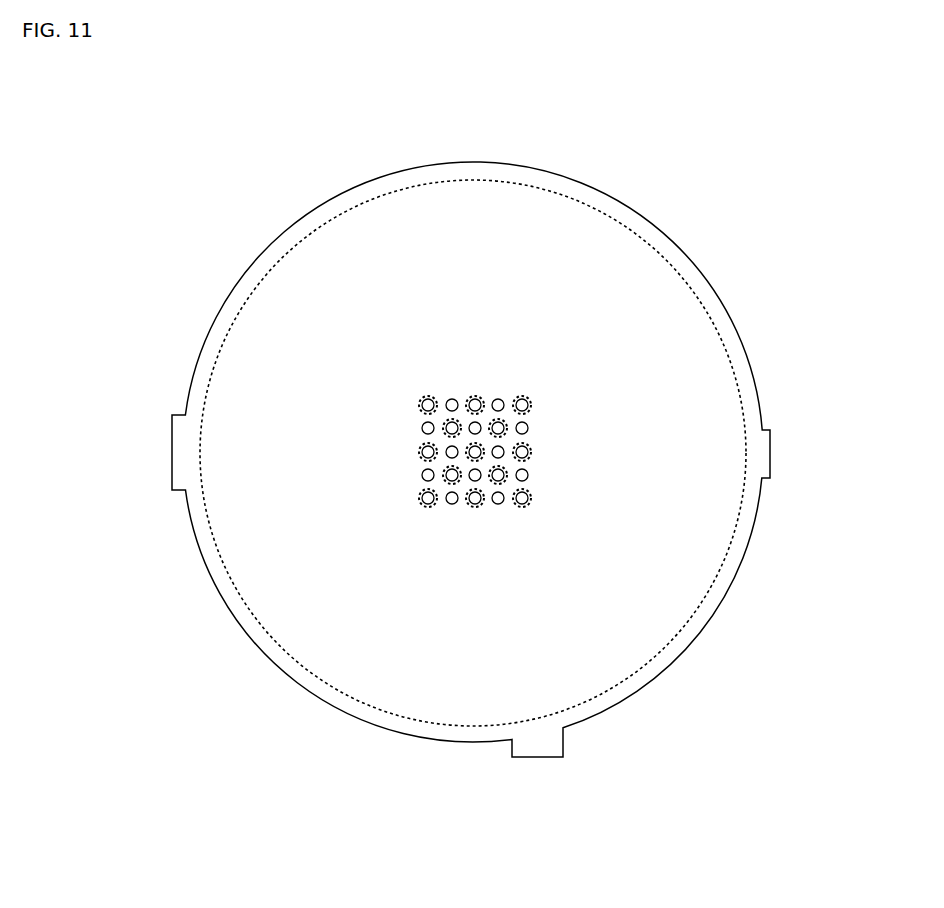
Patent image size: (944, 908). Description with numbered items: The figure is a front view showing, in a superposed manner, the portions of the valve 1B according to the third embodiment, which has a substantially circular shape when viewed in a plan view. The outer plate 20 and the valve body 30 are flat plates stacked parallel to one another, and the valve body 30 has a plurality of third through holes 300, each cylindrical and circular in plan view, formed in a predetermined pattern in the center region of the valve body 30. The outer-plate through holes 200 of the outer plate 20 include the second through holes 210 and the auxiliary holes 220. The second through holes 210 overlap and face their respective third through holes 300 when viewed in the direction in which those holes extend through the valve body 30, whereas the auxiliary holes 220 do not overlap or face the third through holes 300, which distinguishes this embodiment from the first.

The valve 1B is at (738, 120).
The outer plate 20 is at (680, 242).
The valve body 30 is at (607, 215).
The outer-plate through holes 200 is at (823, 338).
The second through holes 210 is at (530, 450).
The auxiliary holes 220 is at (504, 497).
The third through holes 300 is at (524, 404).